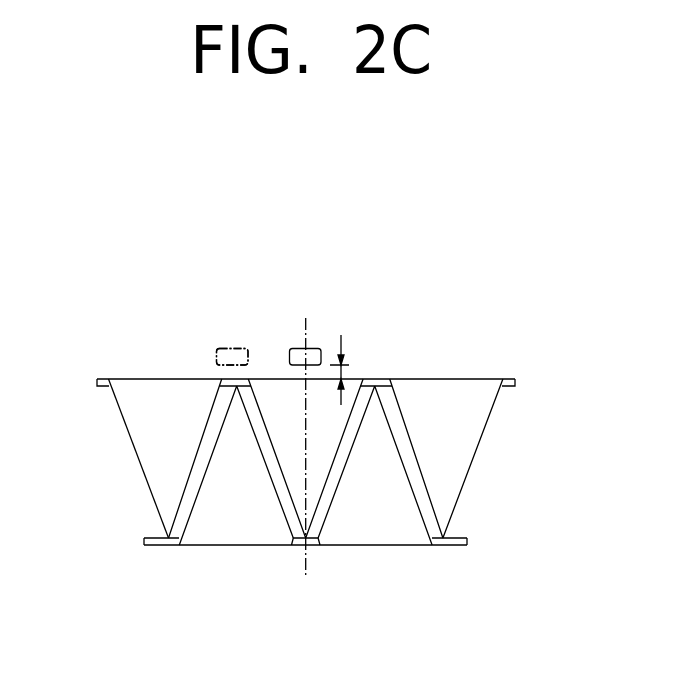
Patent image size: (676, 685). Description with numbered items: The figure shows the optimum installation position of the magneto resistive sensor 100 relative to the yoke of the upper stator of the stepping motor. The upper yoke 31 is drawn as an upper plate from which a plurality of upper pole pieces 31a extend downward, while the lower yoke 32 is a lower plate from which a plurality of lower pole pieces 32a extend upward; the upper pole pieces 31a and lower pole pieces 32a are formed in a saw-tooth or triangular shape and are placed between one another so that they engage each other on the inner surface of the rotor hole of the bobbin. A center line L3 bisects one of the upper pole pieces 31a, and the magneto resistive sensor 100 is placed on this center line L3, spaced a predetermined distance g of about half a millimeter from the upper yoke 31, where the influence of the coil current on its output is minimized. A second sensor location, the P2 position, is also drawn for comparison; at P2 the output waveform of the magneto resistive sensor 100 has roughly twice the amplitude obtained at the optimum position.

The upper yoke 31 is at (513, 378).
The upper pole pieces 31a is at (140, 442).
The lower yoke 32 is at (467, 541).
The lower pole pieces 32a is at (202, 518).
The magneto resistive sensor 100 is at (217, 349).
The P2 position P2 is at (236, 348).
The center line L3 is at (304, 318).
The predetermined distance g is at (346, 370).